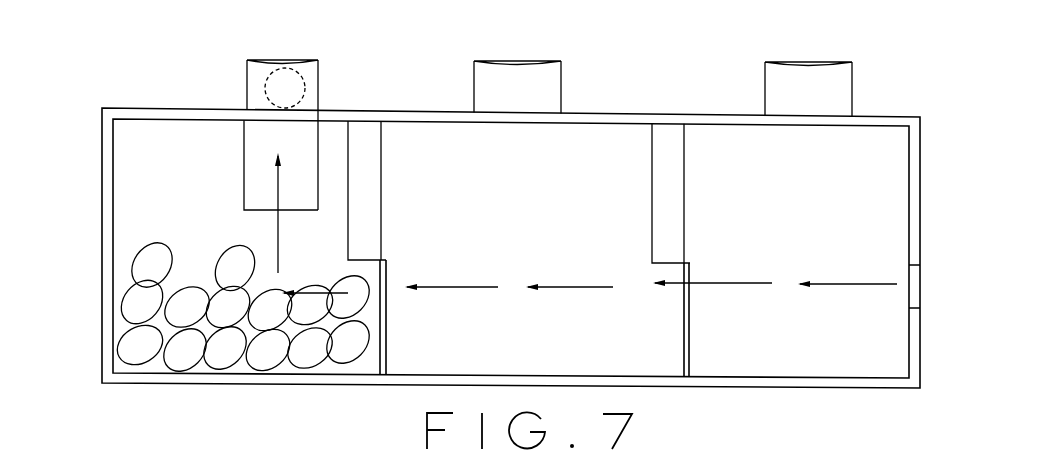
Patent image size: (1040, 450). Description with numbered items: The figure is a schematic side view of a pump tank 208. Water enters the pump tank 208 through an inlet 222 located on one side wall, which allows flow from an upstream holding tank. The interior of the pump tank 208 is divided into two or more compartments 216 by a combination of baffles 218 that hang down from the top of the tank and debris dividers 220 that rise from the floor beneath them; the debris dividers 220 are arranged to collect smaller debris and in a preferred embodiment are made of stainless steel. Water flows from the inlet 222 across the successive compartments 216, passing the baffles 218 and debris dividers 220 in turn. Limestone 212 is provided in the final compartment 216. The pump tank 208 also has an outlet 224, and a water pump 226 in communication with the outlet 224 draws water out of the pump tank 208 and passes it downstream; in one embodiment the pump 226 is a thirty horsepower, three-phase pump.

The pump tank 208 is at (895, 84).
The limestone 212 is at (227, 352).
The compartments 216 is at (153, 152).
The baffles 218 is at (362, 153).
The debris dividers 220 is at (383, 358).
The inlet 222 is at (917, 284).
The outlet 224 is at (286, 56).
The water pump 226 is at (282, 84).